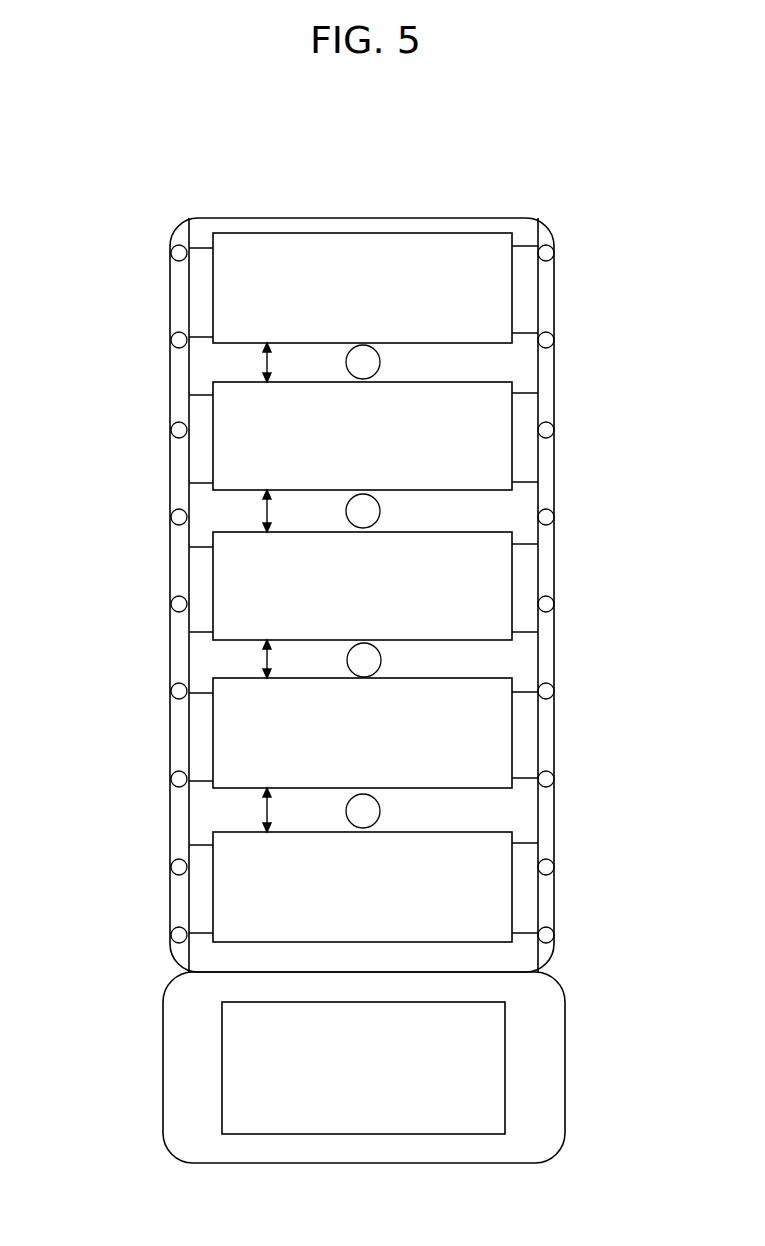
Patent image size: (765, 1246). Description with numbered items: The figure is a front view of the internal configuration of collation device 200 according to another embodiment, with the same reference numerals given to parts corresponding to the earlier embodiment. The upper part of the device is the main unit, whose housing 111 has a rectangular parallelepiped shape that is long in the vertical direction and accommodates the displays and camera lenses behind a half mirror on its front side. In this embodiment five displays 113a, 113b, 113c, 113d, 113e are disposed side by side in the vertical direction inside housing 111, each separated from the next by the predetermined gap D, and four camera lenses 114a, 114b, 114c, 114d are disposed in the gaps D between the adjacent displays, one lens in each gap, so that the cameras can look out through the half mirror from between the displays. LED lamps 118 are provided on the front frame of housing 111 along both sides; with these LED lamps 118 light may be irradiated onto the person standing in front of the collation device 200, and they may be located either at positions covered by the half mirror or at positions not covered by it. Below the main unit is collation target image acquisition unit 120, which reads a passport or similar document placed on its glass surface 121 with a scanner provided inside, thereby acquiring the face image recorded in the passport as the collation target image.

The collation device 200 is at (132, 168).
The housing 111 is at (440, 217).
The display 113a is at (497, 292).
The display 113b is at (497, 446).
The display 113c is at (497, 580).
The display 113d is at (500, 734).
The display 113e is at (500, 887).
The camera lens 114a is at (367, 363).
The camera lens 114b is at (367, 511).
The camera lens 114c is at (368, 660).
The camera lens 114d is at (367, 811).
The LED lamp 118 is at (171, 431).
The collation target image acquisition unit 120 is at (566, 1012).
The glass surface 121 is at (490, 1066).